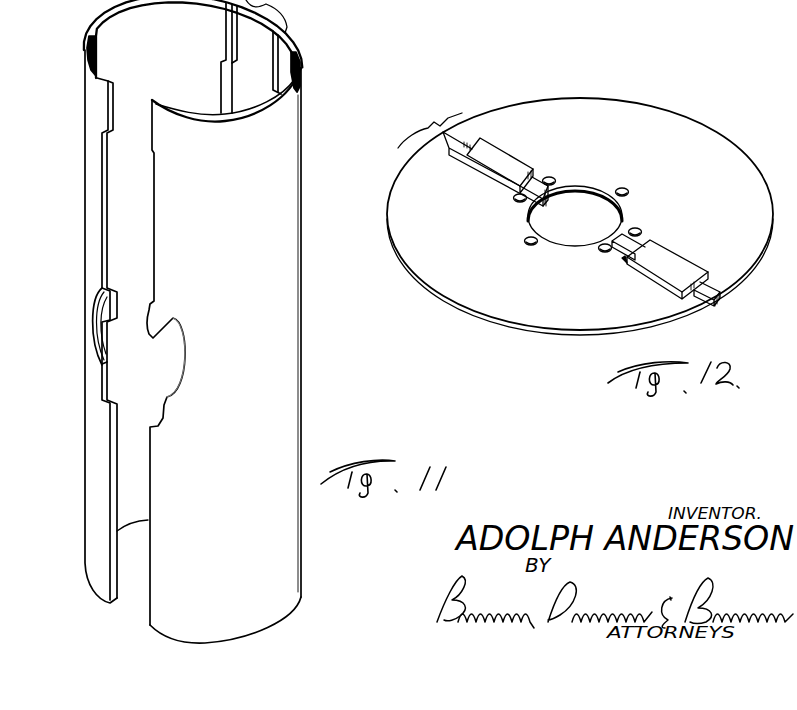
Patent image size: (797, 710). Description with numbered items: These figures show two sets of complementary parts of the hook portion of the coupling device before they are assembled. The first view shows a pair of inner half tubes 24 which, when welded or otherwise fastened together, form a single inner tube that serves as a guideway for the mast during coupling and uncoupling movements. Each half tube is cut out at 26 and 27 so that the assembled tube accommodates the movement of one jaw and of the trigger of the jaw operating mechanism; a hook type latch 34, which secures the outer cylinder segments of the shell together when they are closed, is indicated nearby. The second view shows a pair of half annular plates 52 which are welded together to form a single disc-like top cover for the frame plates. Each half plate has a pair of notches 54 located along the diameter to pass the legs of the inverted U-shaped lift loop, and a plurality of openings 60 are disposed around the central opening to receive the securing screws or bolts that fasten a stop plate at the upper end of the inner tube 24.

In FIG. 11, the half tube 24 is at (86, 224).
In FIG. 11, the cut out 26 is at (102, 364).
In FIG. 11, the cut out 27 is at (104, 252).
In FIG. 12, the hook type latch 34 is at (393, 0).
In FIG. 12, the half annular plate 52 is at (638, 103).
In FIG. 12, the notch 54 is at (510, 155).
In FIG. 12, the opening 60 is at (557, 180).